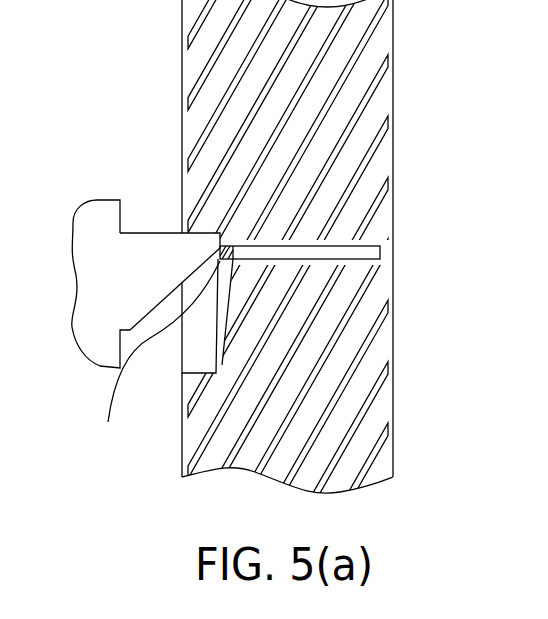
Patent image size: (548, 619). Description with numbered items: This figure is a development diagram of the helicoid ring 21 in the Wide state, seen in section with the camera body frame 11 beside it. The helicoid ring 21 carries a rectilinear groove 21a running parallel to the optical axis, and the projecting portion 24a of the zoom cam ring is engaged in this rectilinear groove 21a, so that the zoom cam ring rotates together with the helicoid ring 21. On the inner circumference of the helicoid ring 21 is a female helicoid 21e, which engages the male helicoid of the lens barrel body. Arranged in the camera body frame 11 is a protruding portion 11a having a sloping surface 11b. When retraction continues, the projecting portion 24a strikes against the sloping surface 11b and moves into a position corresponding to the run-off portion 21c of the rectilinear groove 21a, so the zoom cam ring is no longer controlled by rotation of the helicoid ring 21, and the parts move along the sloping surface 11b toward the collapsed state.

The camera body frame 11 is at (87, 247).
The protruding portion 11a is at (150, 238).
The sloping surface 11b is at (154, 302).
The helicoid ring 21 is at (375, 290).
The rectilinear groove 21a is at (372, 249).
The run-off portion 21c is at (190, 360).
The female helicoid 21e is at (355, 365).
The projecting portion 24a is at (144, 359).